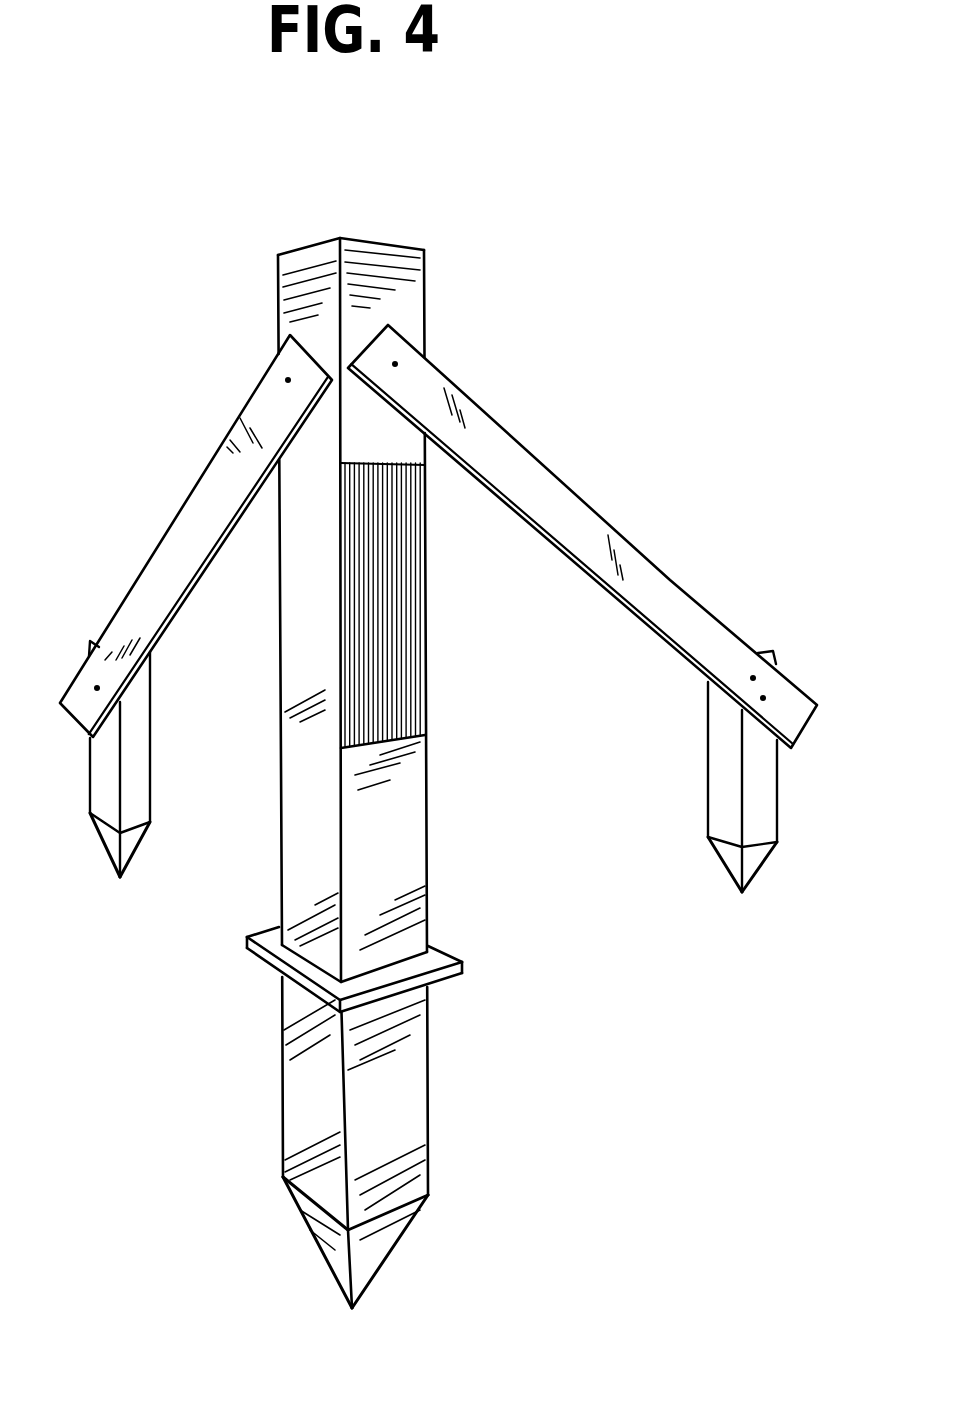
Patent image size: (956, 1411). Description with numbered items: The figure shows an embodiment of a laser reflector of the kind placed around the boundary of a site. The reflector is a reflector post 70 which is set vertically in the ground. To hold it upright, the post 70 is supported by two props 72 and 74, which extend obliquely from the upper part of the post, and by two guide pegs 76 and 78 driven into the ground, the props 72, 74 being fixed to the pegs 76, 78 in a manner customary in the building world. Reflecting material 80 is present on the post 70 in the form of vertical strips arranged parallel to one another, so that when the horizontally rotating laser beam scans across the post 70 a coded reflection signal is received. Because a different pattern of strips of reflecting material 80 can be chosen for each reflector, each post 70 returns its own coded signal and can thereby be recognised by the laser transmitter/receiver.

The reflector post 70 is at (412, 270).
The prop 72 is at (580, 503).
The prop 74 is at (165, 582).
The guide peg 76 is at (759, 803).
The guide peg 78 is at (144, 782).
The reflecting material 80 is at (428, 688).